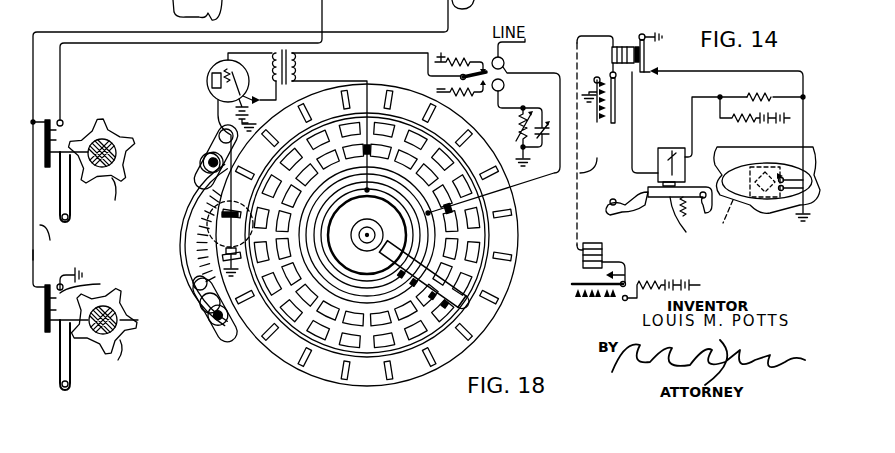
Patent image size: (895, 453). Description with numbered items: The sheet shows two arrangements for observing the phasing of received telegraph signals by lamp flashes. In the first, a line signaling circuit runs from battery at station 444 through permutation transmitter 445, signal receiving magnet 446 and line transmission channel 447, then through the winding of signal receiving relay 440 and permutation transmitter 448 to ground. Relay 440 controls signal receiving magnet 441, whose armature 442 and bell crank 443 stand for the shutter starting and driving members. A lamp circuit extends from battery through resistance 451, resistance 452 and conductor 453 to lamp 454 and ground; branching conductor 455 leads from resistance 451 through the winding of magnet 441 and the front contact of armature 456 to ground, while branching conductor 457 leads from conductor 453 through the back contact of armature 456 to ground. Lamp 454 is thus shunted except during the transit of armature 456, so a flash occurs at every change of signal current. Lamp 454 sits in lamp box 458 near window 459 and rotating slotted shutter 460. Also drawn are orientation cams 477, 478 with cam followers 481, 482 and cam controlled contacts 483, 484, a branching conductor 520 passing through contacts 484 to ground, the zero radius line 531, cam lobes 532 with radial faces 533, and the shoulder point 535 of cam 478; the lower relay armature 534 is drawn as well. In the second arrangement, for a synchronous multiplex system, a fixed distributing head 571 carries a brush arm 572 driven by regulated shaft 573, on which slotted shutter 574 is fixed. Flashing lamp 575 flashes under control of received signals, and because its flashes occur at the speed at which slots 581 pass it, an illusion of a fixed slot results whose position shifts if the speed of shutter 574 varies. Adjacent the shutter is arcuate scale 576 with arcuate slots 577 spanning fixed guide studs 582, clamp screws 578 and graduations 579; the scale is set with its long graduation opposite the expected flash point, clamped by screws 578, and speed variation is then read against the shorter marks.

In FIG. 14, the signal receiving relay 440 is at (612, 56).
In FIG. 14, the signal receiving magnet 441 is at (680, 148).
In FIG. 14, the armature 442 is at (685, 225).
In FIG. 14, the bell crank 443 is at (650, 210).
In FIG. 14, the battery at station 444 is at (624, 275).
In FIG. 14, the permutation transmitter 445 is at (604, 299).
In FIG. 14, the signal receiving magnet 446 is at (608, 244).
In FIG. 14, the line transmission channel 447 is at (598, 157).
In FIG. 14, the permutation transmitter 448 is at (597, 122).
In FIG. 14, the resistance 451 is at (742, 128).
In FIG. 14, the resistance 452 is at (780, 96).
In FIG. 14, the conductor 453 is at (803, 136).
In FIG. 14, the lamp 454 is at (745, 218).
In FIG. 14, the branching conductor 455 is at (692, 127).
In FIG. 14, the armature 456 is at (646, 60).
In FIG. 14, the branching conductor 457 is at (797, 72).
In FIG. 14, the lamp box 458 is at (692, 100).
In FIG. 14, the window 459 is at (726, 246).
In FIG. 14, the rotating slotted shutter 460 is at (797, 166).
In FIG. 18, the cam 477 is at (128, 145).
In FIG. 18, the cam 478 is at (109, 318).
In FIG. 18, the cam follower 481 is at (57, 235).
In FIG. 18, the cam follower 482 is at (72, 372).
In FIG. 18, the cam controlled contacts 483 is at (66, 134).
In FIG. 18, the cam controlled contacts 484 is at (90, 278).
In FIG. 18, the branching conductor 520 is at (35, 253).
In FIG. 18, the zero radius line 531 is at (78, 146).
In FIG. 18, the cam lobes 532 is at (71, 206).
In FIG. 18, the radial faces 533 is at (115, 203).
In FIG. 18, the relay armature 534 is at (60, 348).
In FIG. 18, the shoulder point 535 is at (116, 357).
In FIG. 18, the fixed distributing head 571 is at (470, 346).
In FIG. 18, the brush arm 572 is at (453, 317).
In FIG. 18, the regulated shaft 573 is at (367, 243).
In FIG. 18, the slotted shutter 574 is at (285, 353).
In FIG. 18, the flashing lamp 575 is at (215, 233).
In FIG. 18, the arcuate scale 576 is at (188, 205).
In FIG. 18, the arcuate slots 577 is at (205, 177).
In FIG. 18, the clamp screws 578 is at (210, 152).
In FIG. 18, the graduations 579 is at (208, 259).
In FIG. 18, the slots 581 is at (395, 373).
In FIG. 18, the fixed guide studs 582 is at (213, 130).